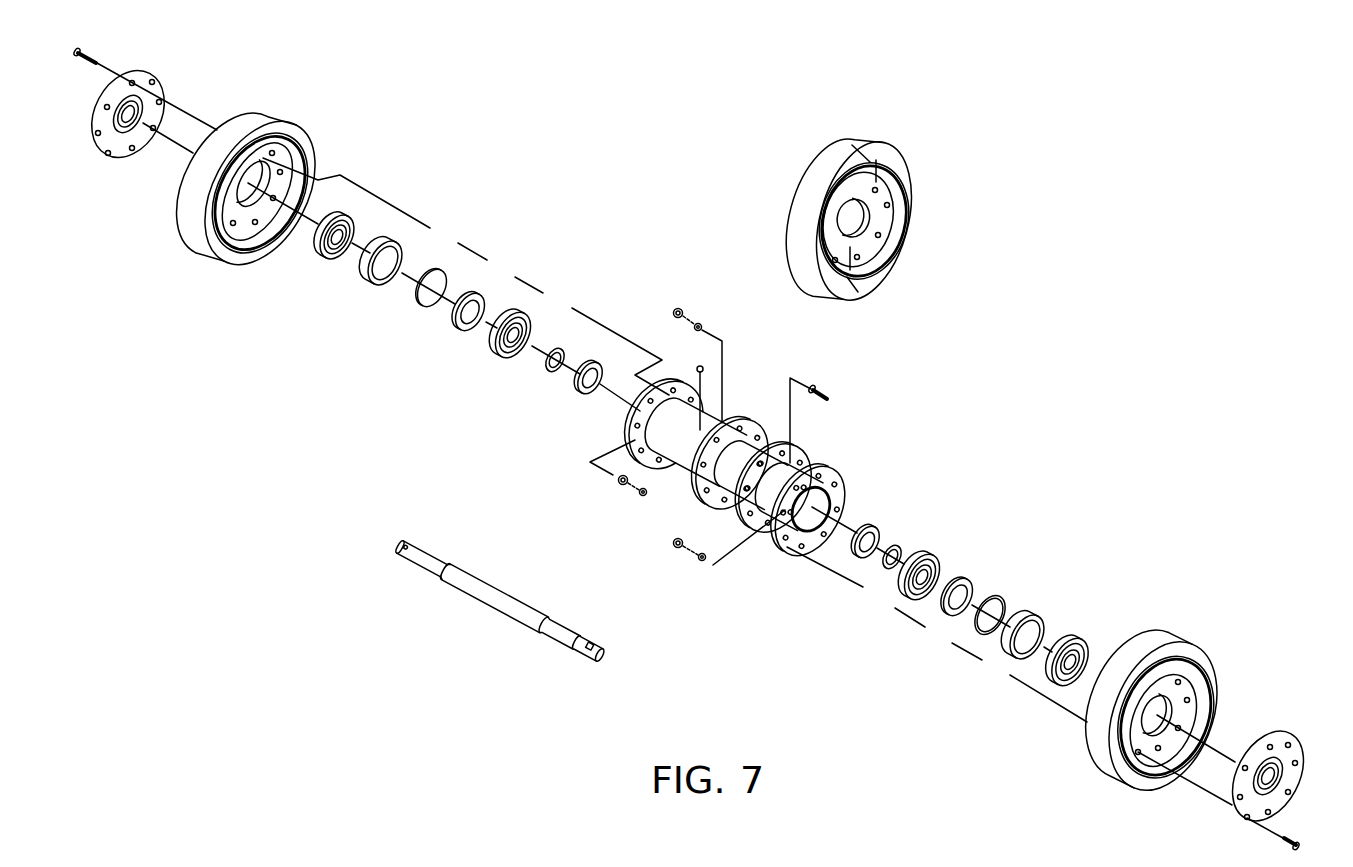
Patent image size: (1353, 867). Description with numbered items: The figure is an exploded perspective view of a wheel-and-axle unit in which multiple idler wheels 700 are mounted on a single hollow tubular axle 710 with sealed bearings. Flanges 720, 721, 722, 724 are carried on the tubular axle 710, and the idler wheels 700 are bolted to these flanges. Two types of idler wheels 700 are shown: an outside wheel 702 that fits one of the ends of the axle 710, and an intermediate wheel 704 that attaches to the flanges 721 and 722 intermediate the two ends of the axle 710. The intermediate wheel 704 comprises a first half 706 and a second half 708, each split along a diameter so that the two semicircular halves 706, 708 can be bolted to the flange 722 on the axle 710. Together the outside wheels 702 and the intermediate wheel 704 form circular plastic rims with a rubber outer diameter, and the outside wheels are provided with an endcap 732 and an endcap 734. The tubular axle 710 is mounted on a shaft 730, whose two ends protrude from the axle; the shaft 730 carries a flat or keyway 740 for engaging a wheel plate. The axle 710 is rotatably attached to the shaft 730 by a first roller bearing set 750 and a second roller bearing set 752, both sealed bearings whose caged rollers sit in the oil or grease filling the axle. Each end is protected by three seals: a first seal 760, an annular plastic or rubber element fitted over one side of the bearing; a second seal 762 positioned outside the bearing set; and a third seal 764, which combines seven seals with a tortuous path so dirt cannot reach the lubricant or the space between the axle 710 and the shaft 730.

The idler wheel 700 is at (1111, 777).
The outside wheel 702 is at (284, 119).
The intermediate wheel 704 is at (860, 198).
The first half 706 is at (796, 190).
The second half 708 is at (922, 212).
The tubular axle 710 is at (736, 480).
The flange 720 is at (632, 428).
The flange 721 is at (741, 418).
The flange 722 is at (803, 450).
The flange 724 is at (844, 477).
The shaft 730 is at (501, 628).
The endcap 732 is at (157, 78).
The endcap 734 is at (1296, 739).
The flat or keyway 740 is at (587, 658).
The first roller bearing set 750 is at (500, 357).
The second roller bearing set 752 is at (932, 557).
The first seal 760 is at (460, 330).
The second seal 762 is at (422, 306).
The third seal 764 is at (326, 256).